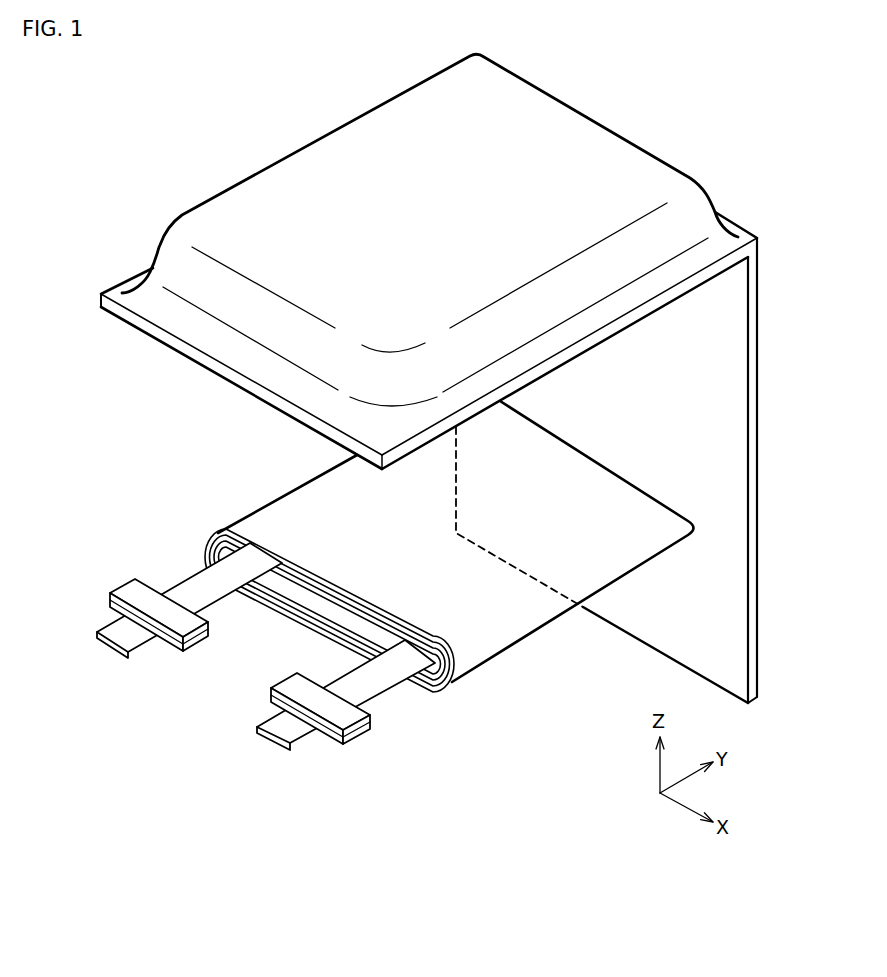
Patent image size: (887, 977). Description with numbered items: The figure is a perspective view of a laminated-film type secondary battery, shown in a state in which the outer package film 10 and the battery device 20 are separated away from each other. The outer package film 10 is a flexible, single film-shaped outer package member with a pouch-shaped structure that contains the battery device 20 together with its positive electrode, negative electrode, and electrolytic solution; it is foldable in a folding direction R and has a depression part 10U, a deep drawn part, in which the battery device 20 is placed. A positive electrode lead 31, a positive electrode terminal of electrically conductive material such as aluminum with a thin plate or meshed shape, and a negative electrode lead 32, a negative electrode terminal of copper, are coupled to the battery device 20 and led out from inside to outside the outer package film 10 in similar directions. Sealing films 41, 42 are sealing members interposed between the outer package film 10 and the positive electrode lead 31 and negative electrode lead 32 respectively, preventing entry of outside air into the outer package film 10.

The outer package film 10 is at (574, 128).
The depression part 10U is at (325, 161).
The battery device 20 is at (527, 664).
The positive electrode lead 31 is at (118, 638).
The negative electrode lead 32 is at (282, 732).
The sealing film 41 is at (128, 595).
The sealing film 42 is at (367, 735).
The folding direction R is at (713, 407).